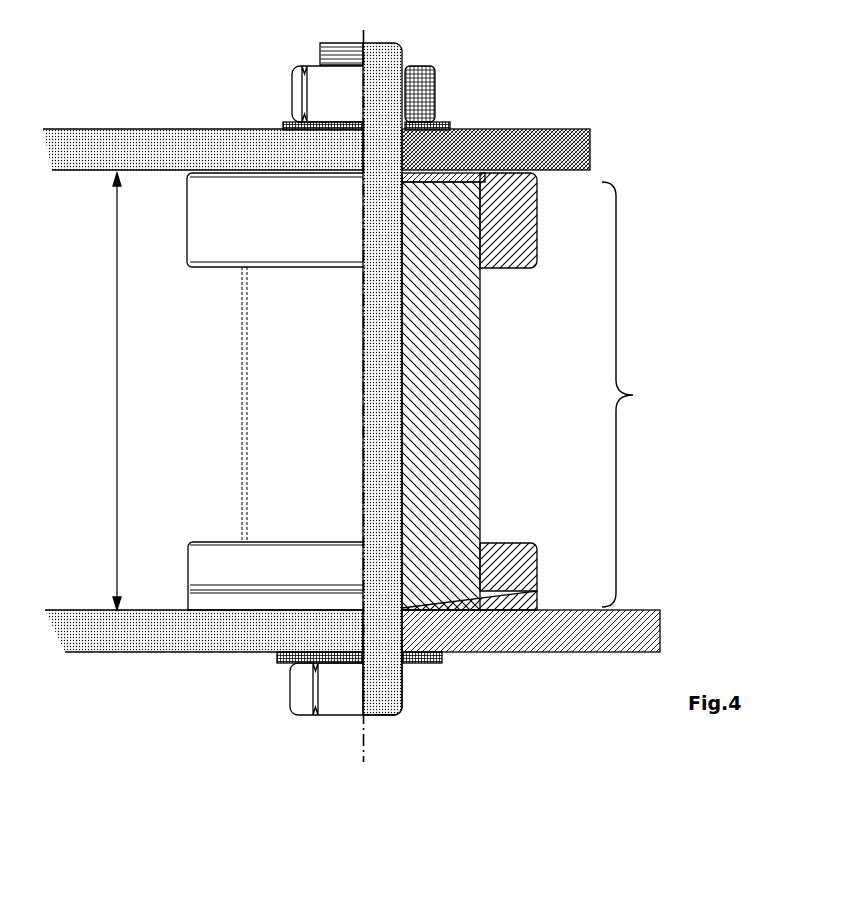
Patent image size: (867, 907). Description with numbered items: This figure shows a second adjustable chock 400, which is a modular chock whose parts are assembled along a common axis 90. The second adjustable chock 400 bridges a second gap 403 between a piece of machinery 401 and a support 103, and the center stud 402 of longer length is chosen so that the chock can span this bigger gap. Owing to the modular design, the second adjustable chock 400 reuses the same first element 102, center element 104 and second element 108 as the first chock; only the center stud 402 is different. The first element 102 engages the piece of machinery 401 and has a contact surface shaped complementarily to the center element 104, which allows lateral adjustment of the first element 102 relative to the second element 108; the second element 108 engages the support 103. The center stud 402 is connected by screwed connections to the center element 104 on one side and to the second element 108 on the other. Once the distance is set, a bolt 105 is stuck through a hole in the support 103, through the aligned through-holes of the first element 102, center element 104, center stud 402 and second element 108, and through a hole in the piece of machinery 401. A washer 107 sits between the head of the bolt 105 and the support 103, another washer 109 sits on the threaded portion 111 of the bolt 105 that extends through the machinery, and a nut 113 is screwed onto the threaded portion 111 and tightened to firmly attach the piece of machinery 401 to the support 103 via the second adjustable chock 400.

The common axis 90 is at (357, 745).
The first element 102 is at (530, 602).
The support 103 is at (128, 640).
The center element 104 is at (520, 567).
The bolt 105 is at (387, 703).
The washer 107 is at (437, 665).
The second element 108 is at (522, 225).
The washer 109 is at (443, 127).
The threaded portion 111 is at (383, 53).
The nut 113 is at (433, 97).
The second adjustable chock 400 is at (642, 394).
The piece of machinery 401 is at (85, 138).
The center stud 402 is at (466, 417).
The second gap 403 is at (117, 493).